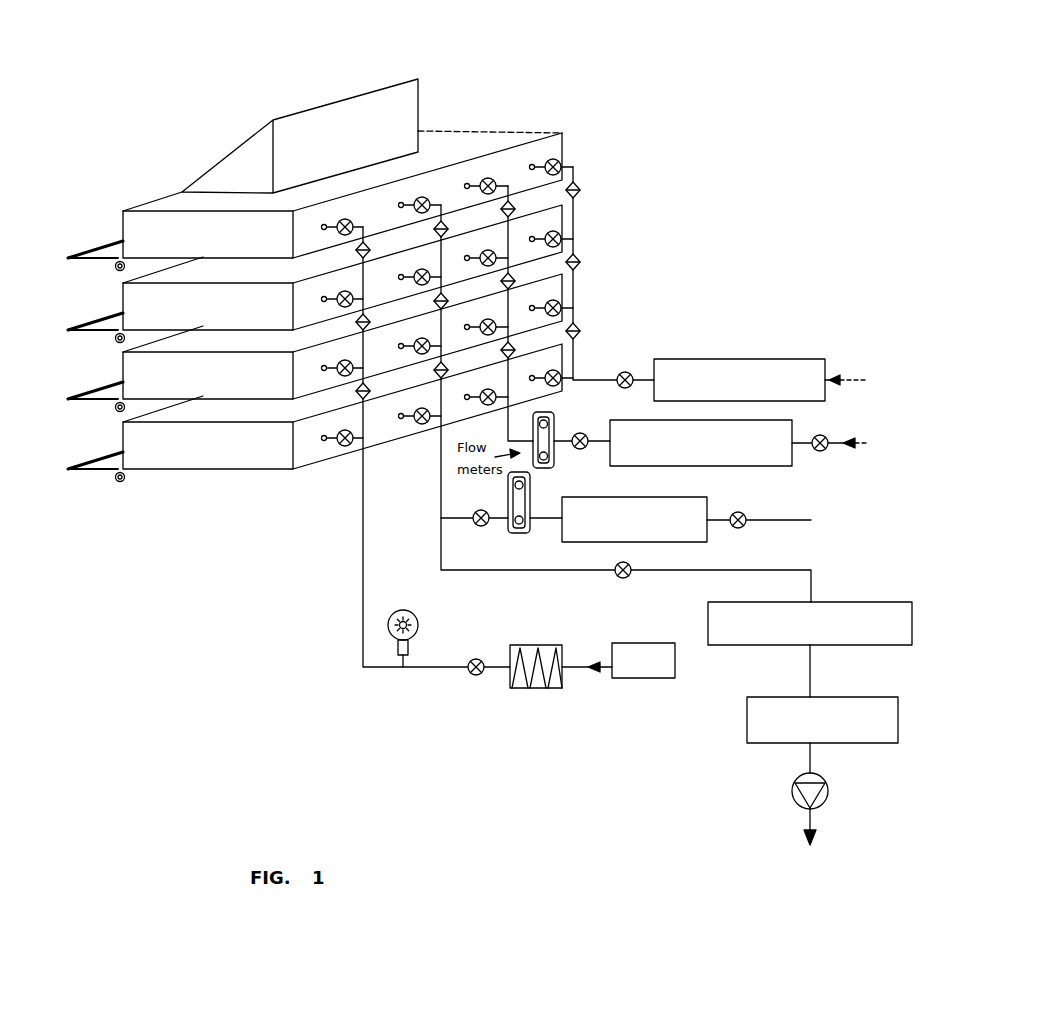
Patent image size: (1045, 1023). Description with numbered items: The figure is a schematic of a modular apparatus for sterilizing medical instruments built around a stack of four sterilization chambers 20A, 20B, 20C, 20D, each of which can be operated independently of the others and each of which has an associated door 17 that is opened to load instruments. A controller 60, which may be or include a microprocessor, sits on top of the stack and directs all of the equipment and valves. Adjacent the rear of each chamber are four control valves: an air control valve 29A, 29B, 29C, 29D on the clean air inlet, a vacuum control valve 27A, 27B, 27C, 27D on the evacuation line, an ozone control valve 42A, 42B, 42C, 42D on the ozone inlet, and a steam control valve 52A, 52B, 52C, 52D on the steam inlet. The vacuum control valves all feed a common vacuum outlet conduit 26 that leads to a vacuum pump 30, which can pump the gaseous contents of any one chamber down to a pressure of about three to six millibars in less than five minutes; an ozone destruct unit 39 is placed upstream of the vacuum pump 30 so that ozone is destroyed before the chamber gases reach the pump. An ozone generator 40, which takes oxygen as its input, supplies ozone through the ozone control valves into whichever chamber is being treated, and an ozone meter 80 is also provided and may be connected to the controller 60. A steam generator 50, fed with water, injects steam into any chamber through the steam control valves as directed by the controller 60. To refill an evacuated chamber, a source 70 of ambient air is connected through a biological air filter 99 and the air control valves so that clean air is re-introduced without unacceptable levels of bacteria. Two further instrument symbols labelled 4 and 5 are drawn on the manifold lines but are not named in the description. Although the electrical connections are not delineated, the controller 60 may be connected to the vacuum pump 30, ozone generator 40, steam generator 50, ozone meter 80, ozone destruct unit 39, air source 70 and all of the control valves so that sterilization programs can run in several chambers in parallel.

The controller 60 is at (367, 90).
The sterilization chamber 20A is at (342, 195).
The sterilization chamber 20B is at (342, 267).
The sterilization chamber 20C is at (342, 336).
The sterilization chamber 20D is at (342, 406).
The door 17 is at (102, 470).
The air control valve 29A is at (337, 207).
The air control valve 29B is at (337, 279).
The air control valve 29C is at (337, 348).
The air control valve 29D is at (337, 418).
The vacuum control valve 27A is at (409, 215).
The vacuum control valve 27B is at (409, 287).
The vacuum control valve 27C is at (409, 356).
The vacuum control valve 27D is at (409, 426).
The ozone control valve 42A is at (491, 179).
The ozone control valve 42B is at (492, 252).
The ozone control valve 42C is at (494, 322).
The ozone control valve 42D is at (481, 402).
The steam control valve 52A is at (558, 161).
The steam control valve 52B is at (561, 239).
The steam control valve 52C is at (561, 311).
The steam control valve 52D is at (562, 381).
The vacuum outlet conduit 26 is at (441, 537).
The steam generator 50 is at (698, 359).
The ozone generator 40 is at (758, 466).
The ozone meter 80 is at (580, 496).
The ozone destruct unit 39 is at (823, 602).
The vacuum pump 30 is at (747, 720).
The biological air filter 99 is at (513, 644).
The source of ambient air 70 is at (647, 680).
The pressure gauge 4 is at (403, 620).
The valve 5 is at (623, 588).